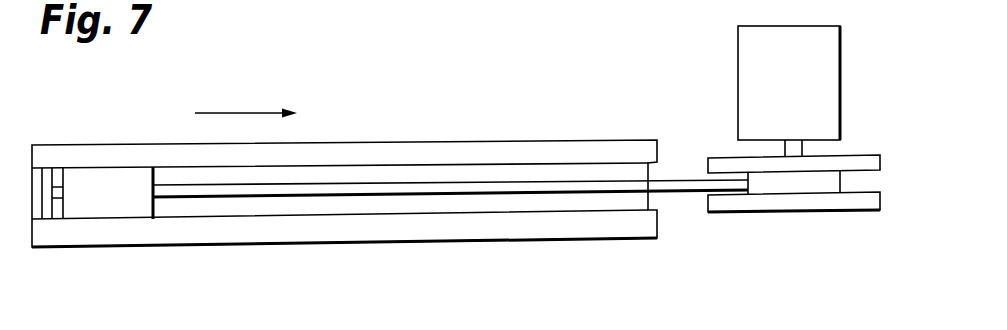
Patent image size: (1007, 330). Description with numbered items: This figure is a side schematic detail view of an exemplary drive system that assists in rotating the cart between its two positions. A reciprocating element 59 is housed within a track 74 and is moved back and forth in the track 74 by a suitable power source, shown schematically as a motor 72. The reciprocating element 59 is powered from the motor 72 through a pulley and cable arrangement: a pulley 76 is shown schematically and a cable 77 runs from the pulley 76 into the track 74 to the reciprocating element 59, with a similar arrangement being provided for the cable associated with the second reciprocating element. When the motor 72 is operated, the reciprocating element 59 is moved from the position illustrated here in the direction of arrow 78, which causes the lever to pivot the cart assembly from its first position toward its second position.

The reciprocating element 59 is at (97, 182).
The motor 72 is at (757, 80).
The track 74 is at (393, 227).
The pulley 76 is at (748, 214).
The cable 77 is at (672, 205).
The arrow 78 is at (214, 113).